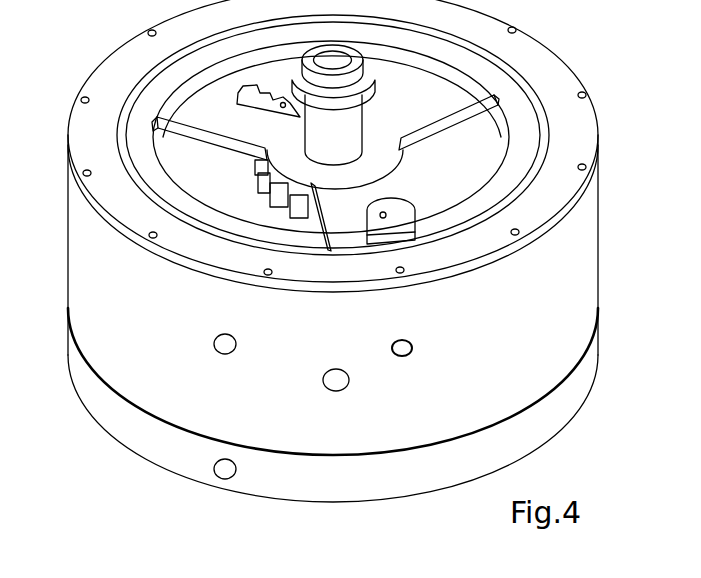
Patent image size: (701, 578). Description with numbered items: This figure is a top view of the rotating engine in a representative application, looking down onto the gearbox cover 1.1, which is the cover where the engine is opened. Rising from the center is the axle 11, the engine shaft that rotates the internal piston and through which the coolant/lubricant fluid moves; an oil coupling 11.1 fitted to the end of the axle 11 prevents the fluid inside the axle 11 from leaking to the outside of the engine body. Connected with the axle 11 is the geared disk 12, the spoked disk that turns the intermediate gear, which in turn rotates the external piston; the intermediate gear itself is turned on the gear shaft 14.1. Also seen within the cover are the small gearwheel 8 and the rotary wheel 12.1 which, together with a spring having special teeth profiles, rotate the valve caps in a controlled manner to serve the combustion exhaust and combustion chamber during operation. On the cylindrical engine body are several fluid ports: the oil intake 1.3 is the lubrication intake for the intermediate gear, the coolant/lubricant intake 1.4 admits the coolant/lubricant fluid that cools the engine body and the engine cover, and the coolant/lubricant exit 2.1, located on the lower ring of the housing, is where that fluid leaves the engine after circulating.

The gearbox cover 1.1 is at (558, 72).
The oil intake 1.3 is at (344, 386).
The coolant/lubricant intake 1.4 is at (236, 343).
The coolant/lubricant exit 2.1 is at (236, 470).
The small gearwheel 8 is at (412, 208).
The axle 11 is at (366, 139).
The oil coupling 11.1 is at (371, 92).
The geared disk 12 is at (427, 123).
The rotary wheel 12.1 is at (255, 187).
The gear shaft 14.1 is at (411, 350).